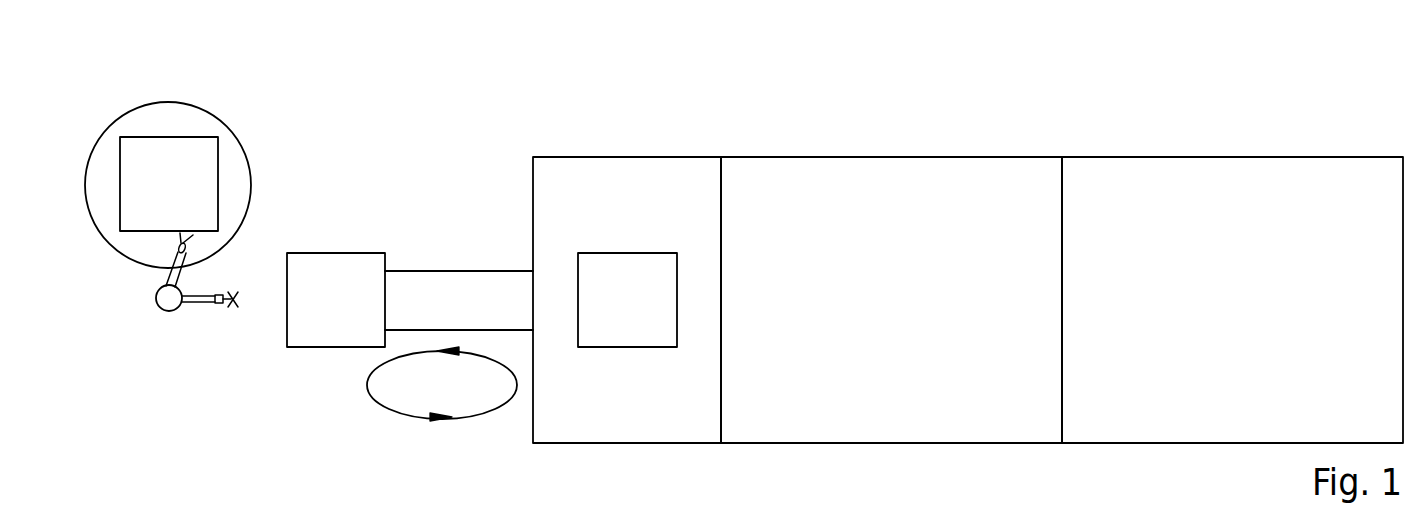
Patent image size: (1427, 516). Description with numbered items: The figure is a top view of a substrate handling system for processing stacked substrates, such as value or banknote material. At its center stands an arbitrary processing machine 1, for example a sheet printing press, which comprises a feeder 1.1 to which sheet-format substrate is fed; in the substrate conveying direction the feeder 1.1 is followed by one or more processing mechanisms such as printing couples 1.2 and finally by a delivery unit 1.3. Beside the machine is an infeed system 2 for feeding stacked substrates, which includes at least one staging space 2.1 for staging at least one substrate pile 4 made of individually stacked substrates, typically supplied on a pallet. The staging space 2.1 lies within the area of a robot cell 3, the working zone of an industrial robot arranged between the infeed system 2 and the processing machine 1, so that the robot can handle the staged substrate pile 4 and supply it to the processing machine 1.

The processing machine 1 is at (845, 231).
The feeder 1.1 is at (627, 284).
The printing couples 1.2 is at (891, 284).
The delivery unit 1.3 is at (1232, 285).
The infeed system 2 is at (208, 151).
The staging space 2.1 is at (138, 105).
The robot cell 3 is at (142, 332).
The substrate pile 4 is at (173, 160).